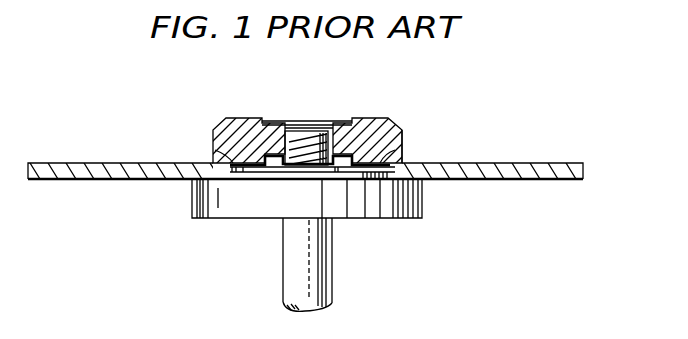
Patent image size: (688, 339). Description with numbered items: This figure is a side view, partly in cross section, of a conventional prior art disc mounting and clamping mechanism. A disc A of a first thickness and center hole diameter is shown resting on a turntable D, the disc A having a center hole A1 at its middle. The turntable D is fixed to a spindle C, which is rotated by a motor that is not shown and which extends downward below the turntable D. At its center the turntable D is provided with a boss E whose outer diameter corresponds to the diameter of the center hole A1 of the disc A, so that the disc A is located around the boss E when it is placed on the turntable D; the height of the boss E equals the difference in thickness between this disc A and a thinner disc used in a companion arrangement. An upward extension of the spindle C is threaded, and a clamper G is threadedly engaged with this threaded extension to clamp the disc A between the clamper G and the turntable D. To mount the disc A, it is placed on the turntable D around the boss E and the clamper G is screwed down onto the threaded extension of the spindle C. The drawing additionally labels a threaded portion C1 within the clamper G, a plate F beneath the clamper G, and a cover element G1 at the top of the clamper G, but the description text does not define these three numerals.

The disc A is at (515, 162).
The center hole of the disc A1 is at (403, 143).
The spindle C is at (333, 245).
The threaded bolt portion C1 is at (301, 143).
The turntable D is at (218, 219).
The boss E is at (232, 163).
The spring plate F is at (273, 148).
The clamper G is at (378, 122).
The nut cover plate G1 is at (322, 124).